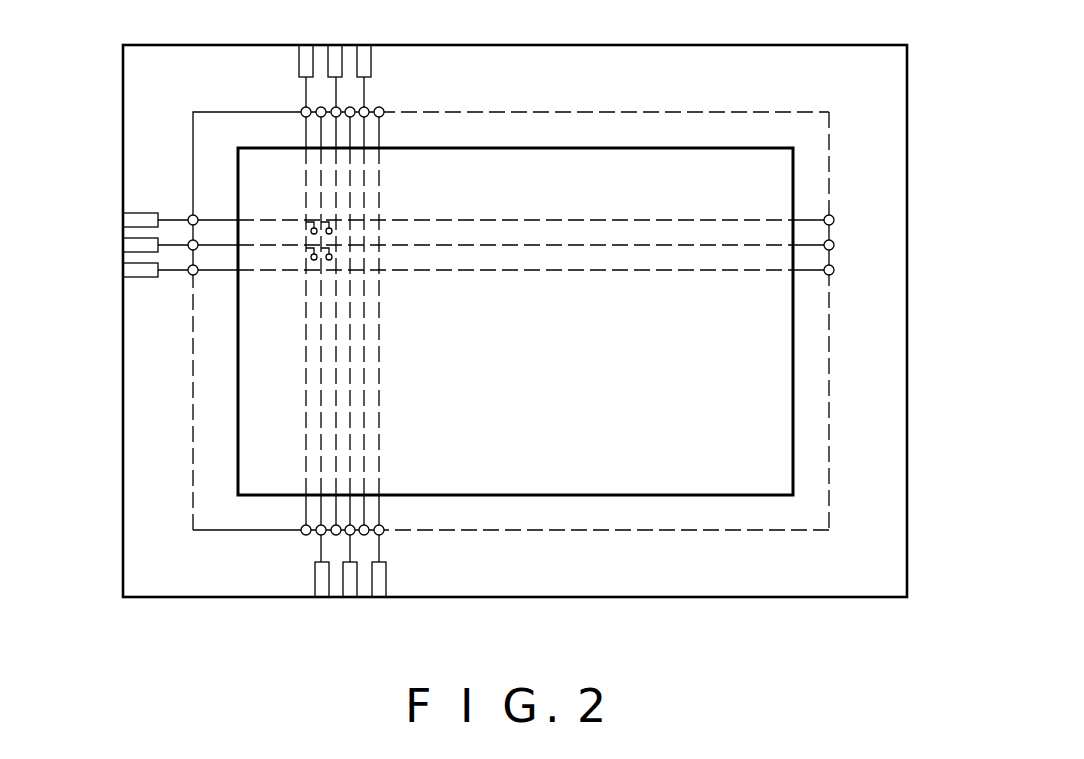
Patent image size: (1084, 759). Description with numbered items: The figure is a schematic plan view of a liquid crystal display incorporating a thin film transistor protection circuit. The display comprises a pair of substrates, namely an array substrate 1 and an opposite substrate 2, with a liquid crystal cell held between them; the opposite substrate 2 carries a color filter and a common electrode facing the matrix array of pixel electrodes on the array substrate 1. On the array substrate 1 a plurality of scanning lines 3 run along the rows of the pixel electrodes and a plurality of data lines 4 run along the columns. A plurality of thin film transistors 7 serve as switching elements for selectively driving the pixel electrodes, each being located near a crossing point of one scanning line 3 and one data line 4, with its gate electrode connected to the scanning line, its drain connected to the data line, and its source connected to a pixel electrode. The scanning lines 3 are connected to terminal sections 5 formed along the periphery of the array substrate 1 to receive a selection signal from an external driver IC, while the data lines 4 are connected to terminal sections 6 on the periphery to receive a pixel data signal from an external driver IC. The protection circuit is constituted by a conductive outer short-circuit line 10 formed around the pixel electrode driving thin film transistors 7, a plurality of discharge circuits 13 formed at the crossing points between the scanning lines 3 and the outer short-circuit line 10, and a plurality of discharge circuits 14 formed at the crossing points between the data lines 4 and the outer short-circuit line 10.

The array substrate 1 is at (742, 45).
The opposite substrate 2 is at (793, 178).
The scanning lines 3 is at (215, 271).
The data lines 4 is at (306, 132).
The terminal sections 5 is at (123, 216).
The terminal sections 6 is at (336, 45).
The thin film transistors 7 is at (306, 234).
The outer short-circuit line 10 is at (225, 530).
The discharge circuits 13 is at (189, 214).
The discharge circuits 14 is at (382, 106).